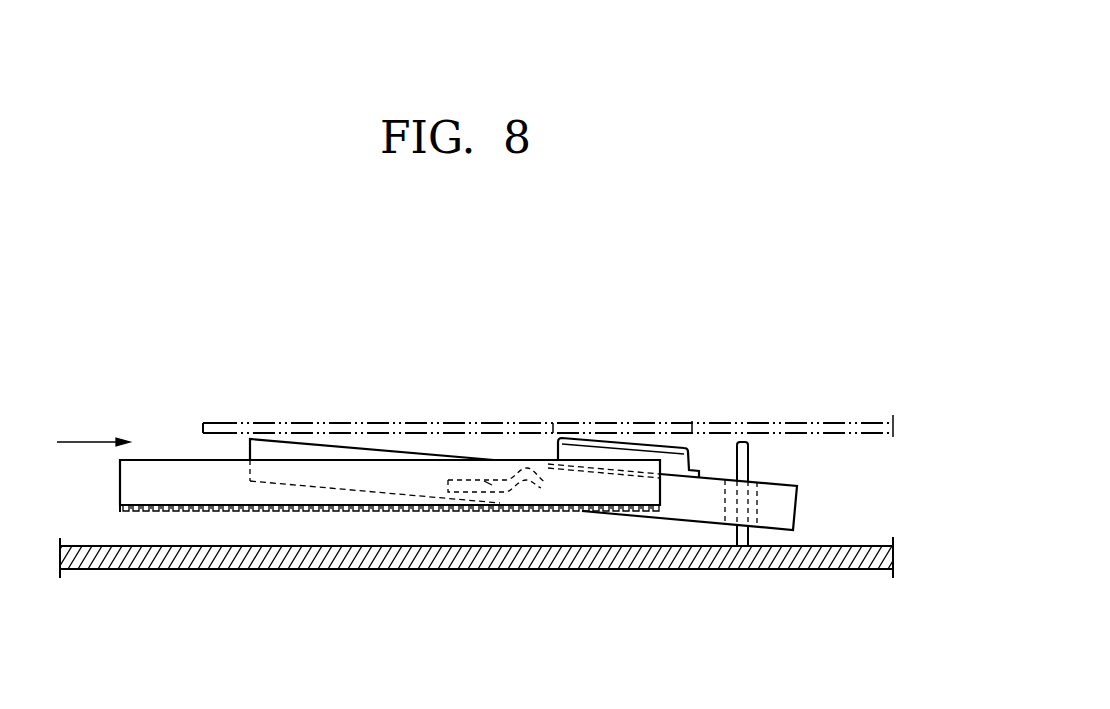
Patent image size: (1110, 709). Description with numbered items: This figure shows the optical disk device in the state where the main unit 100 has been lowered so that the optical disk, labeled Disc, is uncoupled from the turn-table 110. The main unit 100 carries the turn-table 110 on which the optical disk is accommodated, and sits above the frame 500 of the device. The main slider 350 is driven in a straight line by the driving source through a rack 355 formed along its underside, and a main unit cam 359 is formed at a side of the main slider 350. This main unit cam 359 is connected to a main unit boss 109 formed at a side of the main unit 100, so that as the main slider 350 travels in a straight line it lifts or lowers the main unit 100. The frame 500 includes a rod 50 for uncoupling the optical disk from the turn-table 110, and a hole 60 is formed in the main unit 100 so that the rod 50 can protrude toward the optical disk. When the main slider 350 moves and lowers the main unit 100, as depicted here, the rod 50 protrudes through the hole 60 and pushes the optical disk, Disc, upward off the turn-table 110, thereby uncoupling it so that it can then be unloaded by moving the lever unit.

The optical disk Disc is at (251, 423).
The rod 50 is at (748, 458).
The hole 60 is at (751, 497).
The main unit 100 is at (302, 437).
The main unit boss 109 is at (489, 483).
The turn-table 110 is at (587, 450).
The main slider 350 is at (153, 470).
The rack 355 is at (167, 508).
The main unit cam 359 is at (460, 483).
The frame 500 is at (270, 570).